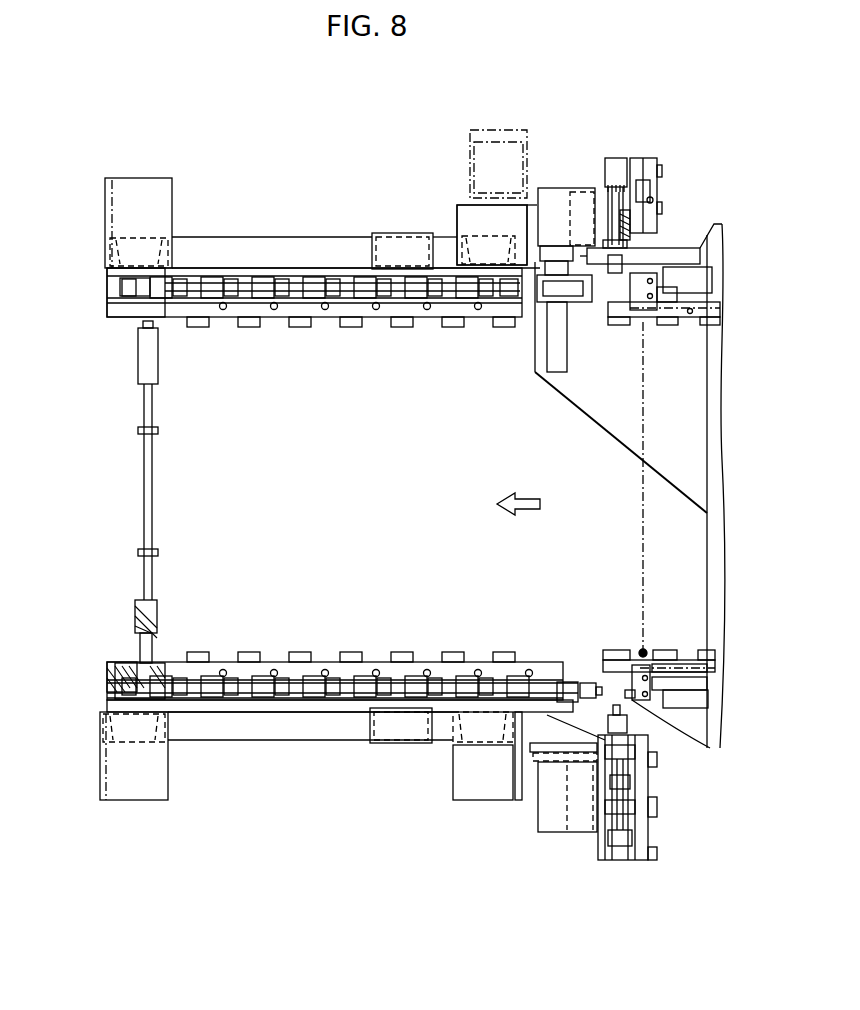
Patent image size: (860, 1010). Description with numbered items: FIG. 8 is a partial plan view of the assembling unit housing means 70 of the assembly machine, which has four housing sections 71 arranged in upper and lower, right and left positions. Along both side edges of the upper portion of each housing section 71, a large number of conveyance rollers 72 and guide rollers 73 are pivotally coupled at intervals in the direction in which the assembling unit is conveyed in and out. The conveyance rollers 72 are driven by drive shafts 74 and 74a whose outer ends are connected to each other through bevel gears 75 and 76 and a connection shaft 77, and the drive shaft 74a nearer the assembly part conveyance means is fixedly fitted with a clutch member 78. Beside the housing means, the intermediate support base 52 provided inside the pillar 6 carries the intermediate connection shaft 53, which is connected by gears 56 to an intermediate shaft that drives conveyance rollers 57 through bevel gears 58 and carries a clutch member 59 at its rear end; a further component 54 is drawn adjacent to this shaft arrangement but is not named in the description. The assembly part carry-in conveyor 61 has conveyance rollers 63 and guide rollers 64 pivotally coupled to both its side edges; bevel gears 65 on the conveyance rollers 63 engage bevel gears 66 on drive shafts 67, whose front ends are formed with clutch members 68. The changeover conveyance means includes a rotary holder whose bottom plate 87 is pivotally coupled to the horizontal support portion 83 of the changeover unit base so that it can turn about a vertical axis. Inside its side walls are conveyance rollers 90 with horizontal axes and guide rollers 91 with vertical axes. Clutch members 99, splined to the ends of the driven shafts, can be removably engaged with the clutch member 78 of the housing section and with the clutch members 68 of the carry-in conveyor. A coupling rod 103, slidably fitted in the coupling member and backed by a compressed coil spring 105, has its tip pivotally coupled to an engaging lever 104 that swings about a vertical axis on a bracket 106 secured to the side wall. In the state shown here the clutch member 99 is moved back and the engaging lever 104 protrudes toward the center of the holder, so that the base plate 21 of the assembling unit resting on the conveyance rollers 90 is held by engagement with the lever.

The assembling unit housing means 70 is at (265, 191).
The housing section 71 is at (319, 508).
The conveyance rollers 72 is at (354, 324).
The guide rollers 73 is at (274, 310).
The drive shaft 74 is at (300, 283).
The drive shaft 74a is at (296, 692).
The bevel gear 75 is at (137, 298).
The bevel gear 76 is at (150, 300).
The connection shaft 77 is at (157, 498).
The clutch member 78 is at (586, 680).
The pillar 6 is at (567, 204).
The intermediate support base 52 is at (603, 230).
The intermediate connection shaft 53 is at (630, 276).
The bracket 54 is at (638, 160).
The gears 56 is at (604, 182).
The conveyance rollers 57 is at (655, 171).
The bevel gears 58 is at (604, 184).
The clutch member 59 is at (610, 267).
The assembly part carry-in conveyor 61 is at (658, 832).
The conveyance rollers 63 is at (657, 806).
The guide rollers 64 is at (637, 833).
The bevel gears 65 is at (651, 756).
The bevel gears 66 is at (617, 821).
The drive shafts 67 is at (620, 824).
The clutch members 68 is at (608, 720).
The horizontal support portion 83 is at (594, 408).
The bottom plate 87 is at (720, 498).
The conveyance rollers 90 is at (664, 328).
The guide rollers 91 is at (685, 318).
The clutch members 99 is at (625, 690).
The coupling rod 103 is at (697, 662).
The engaging lever 104 is at (640, 651).
The compressed coil spring 105 is at (707, 684).
The bracket 106 is at (687, 718).
The base plate 21 is at (643, 502).